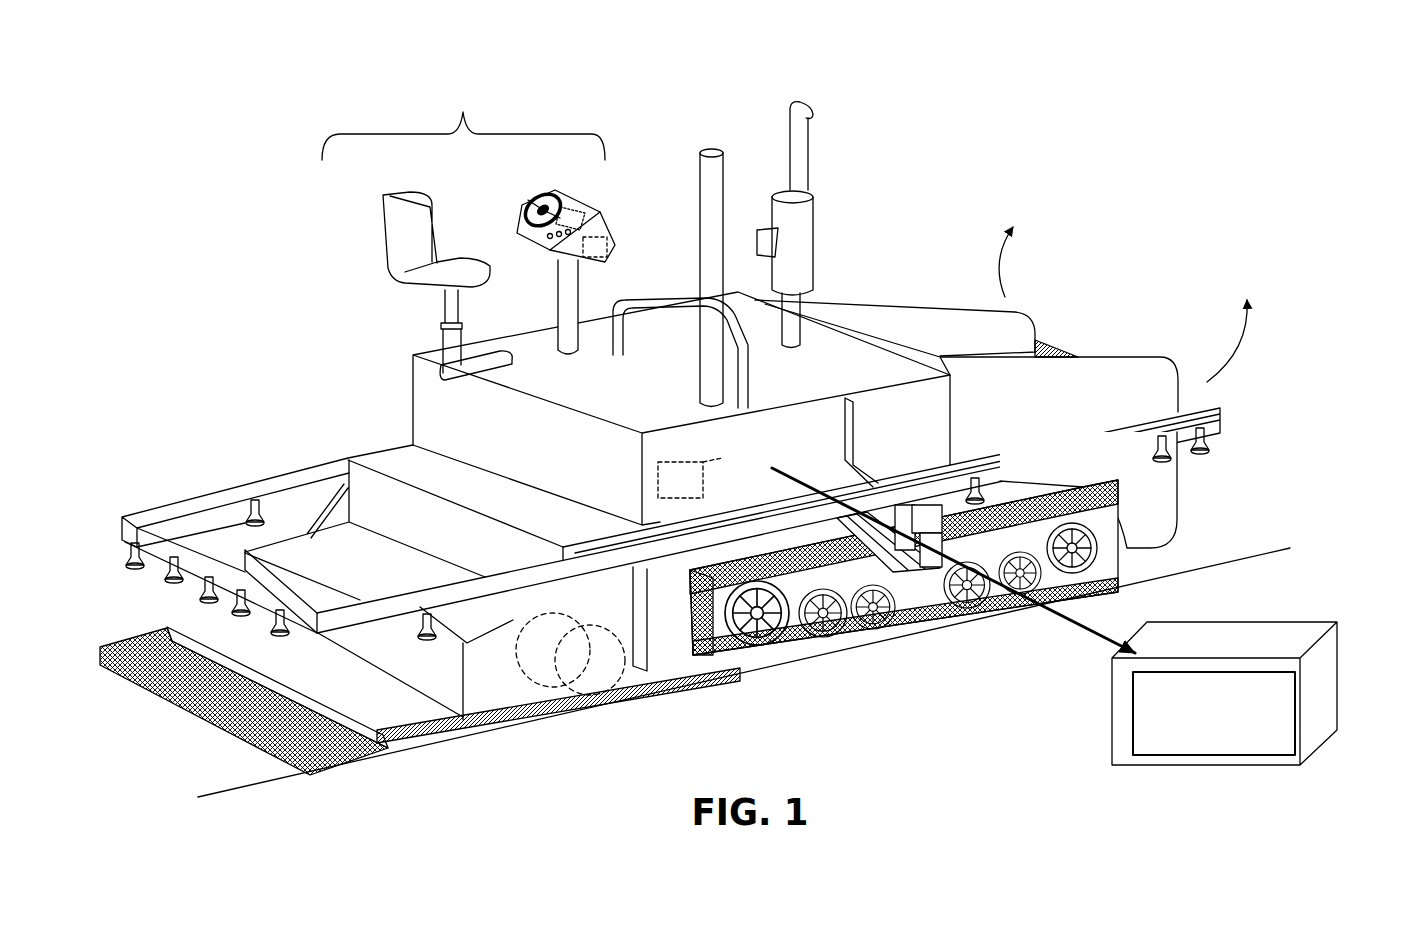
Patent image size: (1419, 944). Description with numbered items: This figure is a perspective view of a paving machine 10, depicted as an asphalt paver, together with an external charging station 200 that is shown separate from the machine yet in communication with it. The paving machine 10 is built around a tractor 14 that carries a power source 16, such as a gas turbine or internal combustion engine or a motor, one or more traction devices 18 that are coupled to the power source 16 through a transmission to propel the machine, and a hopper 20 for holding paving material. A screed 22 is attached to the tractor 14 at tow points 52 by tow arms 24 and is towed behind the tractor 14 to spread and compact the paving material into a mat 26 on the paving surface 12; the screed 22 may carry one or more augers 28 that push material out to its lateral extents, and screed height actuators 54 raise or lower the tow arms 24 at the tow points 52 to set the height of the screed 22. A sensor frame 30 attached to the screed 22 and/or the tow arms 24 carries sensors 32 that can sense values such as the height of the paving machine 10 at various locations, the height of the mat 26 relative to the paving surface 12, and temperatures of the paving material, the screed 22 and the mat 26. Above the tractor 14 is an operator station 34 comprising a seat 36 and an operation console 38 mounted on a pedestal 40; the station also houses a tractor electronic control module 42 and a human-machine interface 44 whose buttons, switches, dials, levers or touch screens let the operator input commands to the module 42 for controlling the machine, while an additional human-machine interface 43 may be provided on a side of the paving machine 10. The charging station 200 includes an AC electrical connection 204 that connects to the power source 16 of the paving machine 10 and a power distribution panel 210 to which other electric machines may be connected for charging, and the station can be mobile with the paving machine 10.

The paving machine 10 is at (950, 188).
The paving surface 12 is at (235, 778).
The tractor 14 is at (411, 402).
The power source 16 is at (835, 449).
The traction devices 18 is at (1120, 580).
The hopper 20 is at (1080, 352).
The screed 22 is at (510, 697).
The tow arms 24 is at (853, 648).
The mat 26 is at (357, 760).
The augers 28 is at (647, 678).
The sensor frame 30 is at (317, 470).
The sensors 32 is at (241, 588).
The operator station 34 is at (463, 114).
The seat 36 is at (398, 229).
The operation console 38 is at (582, 186).
The pedestal 40 is at (577, 291).
The tractor electronic control module 42 is at (620, 250).
The human-machine interface 43 is at (708, 469).
The human-machine interface 44 is at (513, 236).
The tow points 52 is at (920, 590).
The screed height actuators 54 is at (967, 626).
The charging station 200 is at (1285, 620).
The AC electrical connection 204 is at (953, 567).
The power distribution panel 210 is at (1283, 727).